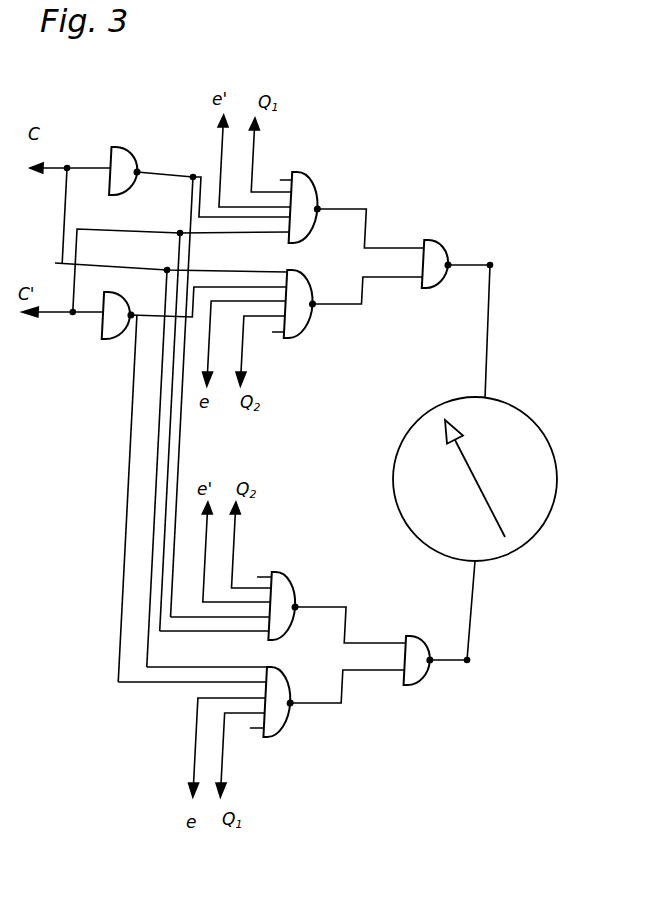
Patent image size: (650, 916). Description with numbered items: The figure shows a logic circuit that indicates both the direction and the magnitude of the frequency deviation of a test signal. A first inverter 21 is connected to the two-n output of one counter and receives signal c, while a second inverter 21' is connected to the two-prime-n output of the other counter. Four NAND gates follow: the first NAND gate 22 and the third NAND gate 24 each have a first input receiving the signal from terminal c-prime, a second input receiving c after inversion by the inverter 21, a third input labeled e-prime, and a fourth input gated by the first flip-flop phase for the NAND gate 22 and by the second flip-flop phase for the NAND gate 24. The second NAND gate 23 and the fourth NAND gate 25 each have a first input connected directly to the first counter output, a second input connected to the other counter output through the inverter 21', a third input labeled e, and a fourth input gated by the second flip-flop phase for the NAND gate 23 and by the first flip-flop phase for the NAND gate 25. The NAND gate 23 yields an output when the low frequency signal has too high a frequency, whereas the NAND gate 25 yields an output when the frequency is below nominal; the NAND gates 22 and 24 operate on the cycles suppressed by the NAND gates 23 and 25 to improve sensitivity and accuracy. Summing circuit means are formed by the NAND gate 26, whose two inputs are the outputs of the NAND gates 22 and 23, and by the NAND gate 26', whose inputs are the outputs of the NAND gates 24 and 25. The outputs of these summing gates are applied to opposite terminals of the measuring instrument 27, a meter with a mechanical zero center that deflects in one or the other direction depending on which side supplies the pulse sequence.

The first inverter 21 is at (128, 159).
The second inverter 21' is at (126, 305).
The first NAND gate 22 is at (313, 190).
The second NAND gate 23 is at (307, 290).
The third NAND gate 24 is at (296, 598).
The fourth NAND gate 25 is at (290, 688).
The NAND gate 26 is at (448, 252).
The NAND gate 26' is at (427, 647).
The measuring instrument 27 is at (558, 487).